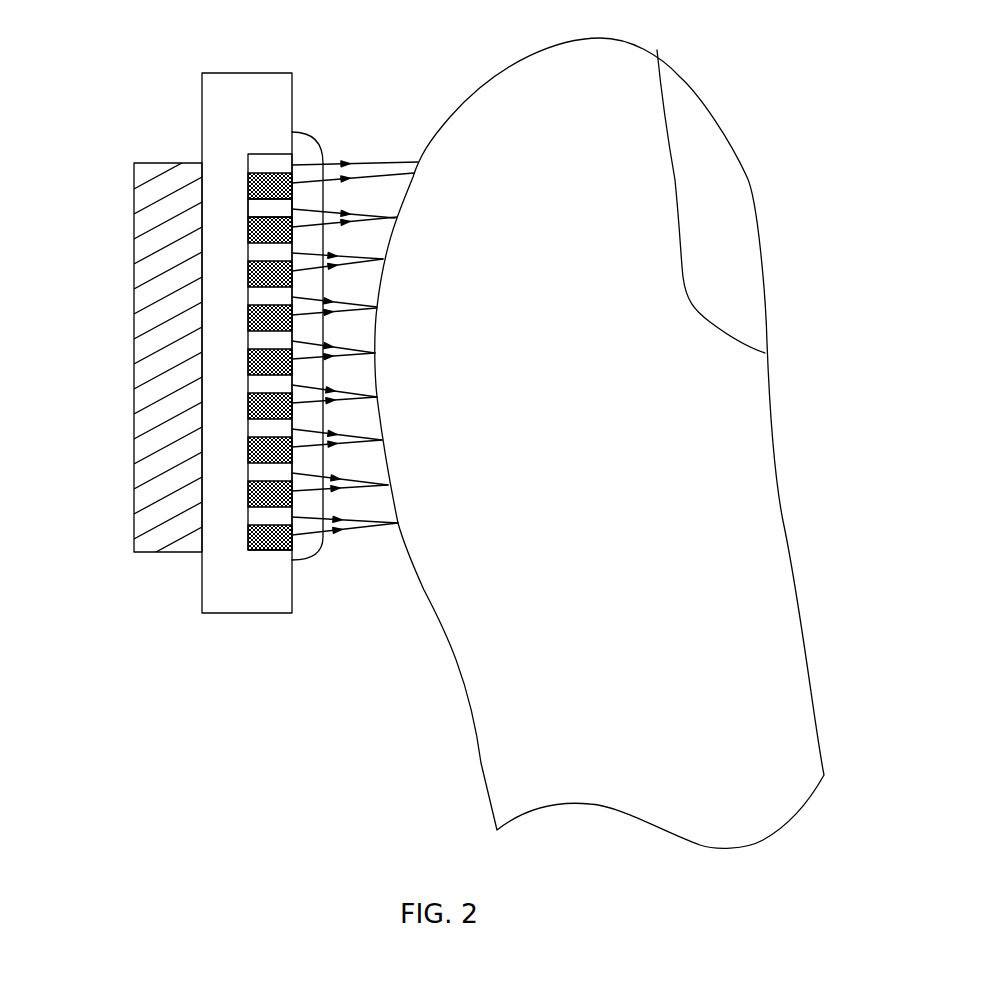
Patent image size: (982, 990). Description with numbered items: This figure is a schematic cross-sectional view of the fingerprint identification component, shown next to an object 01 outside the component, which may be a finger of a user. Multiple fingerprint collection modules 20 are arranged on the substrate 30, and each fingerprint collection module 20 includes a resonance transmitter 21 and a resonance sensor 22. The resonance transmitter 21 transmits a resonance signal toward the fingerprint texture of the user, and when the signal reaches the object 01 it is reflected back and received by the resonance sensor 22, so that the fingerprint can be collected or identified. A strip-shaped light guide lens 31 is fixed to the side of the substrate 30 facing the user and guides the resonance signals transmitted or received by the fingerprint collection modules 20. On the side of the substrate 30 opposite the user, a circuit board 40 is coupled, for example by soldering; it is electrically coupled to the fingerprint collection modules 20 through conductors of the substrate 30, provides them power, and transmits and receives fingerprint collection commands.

The object 01 is at (518, 88).
The fingerprint collection module 20 is at (168, 352).
The resonance transmitter 21 is at (248, 210).
The resonance sensor 22 is at (248, 242).
The substrate 30 is at (223, 102).
The light guide lens 31 is at (309, 157).
The circuit board 40 is at (175, 513).